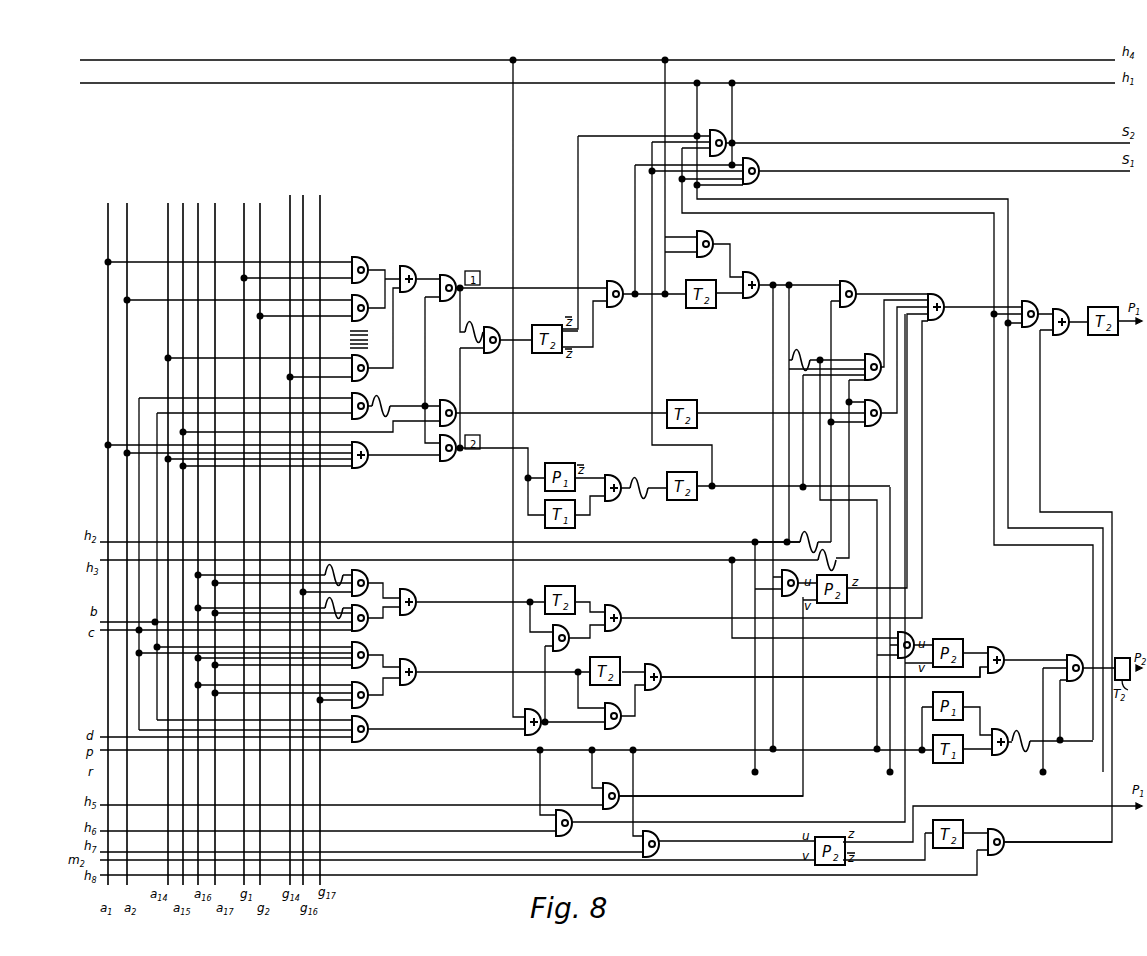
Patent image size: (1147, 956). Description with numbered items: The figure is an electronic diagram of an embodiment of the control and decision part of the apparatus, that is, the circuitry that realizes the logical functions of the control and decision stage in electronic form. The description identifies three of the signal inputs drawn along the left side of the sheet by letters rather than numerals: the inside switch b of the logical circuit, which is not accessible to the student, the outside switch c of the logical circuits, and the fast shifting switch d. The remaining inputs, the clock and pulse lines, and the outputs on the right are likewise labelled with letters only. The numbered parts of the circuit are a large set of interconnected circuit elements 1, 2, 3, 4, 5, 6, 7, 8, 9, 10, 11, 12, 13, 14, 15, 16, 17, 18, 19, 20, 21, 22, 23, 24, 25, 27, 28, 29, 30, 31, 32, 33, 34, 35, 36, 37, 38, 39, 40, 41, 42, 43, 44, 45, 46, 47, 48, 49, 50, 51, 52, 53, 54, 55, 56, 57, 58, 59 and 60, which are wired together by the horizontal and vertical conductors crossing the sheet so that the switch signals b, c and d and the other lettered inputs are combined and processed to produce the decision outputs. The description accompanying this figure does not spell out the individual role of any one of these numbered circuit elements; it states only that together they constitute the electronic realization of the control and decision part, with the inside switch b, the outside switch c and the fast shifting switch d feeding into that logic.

The delay element 1 is at (474, 328).
The NAND gate 2 is at (496, 333).
The flip-flop T2 3 is at (547, 329).
The NAND gate 4 is at (618, 289).
The flip-flop T2 5 is at (706, 299).
The NAND gate 6 is at (707, 238).
The OR gate 7 is at (752, 278).
The delay element 8 is at (801, 355).
The NAND gate 9 is at (851, 289).
The NAND gate 10 is at (875, 360).
The NAND gate 11 is at (883, 411).
The OR gate 12 is at (943, 303).
The delay element 13 is at (811, 534).
The line 14 is at (779, 550).
The pulse generator P1 15 is at (560, 468).
The flip-flop T1 16 is at (570, 521).
The OR gate 17 is at (616, 479).
The delay element 18 is at (642, 483).
The flip-flop T2 19 is at (682, 477).
The NAND gate 20 is at (795, 577).
The pulse generator P2 21 is at (836, 577).
The NAND gate 22 is at (354, 579).
The NAND gate 23 is at (355, 615).
The OR gate 24 is at (413, 596).
The flip-flop T2 and OR gate 25 is at (591, 600).
The NAND gate 27 is at (571, 635).
The NAND gate 28 is at (367, 725).
The OR gate 29 is at (534, 715).
The NAND gate 30 is at (1033, 308).
The line 31 is at (822, 679).
The flip-flop T1 32 is at (939, 728).
The OR gate 33 is at (1004, 737).
The delay element 34 is at (1029, 736).
The NAND gate 35 is at (909, 637).
The pulse generator P2 36 is at (948, 644).
The OR gate 37 is at (1006, 655).
The NAND gate 38 is at (1081, 662).
The NAND gate 39 is at (567, 818).
The NAND gate 40 is at (616, 791).
The flip-flop T2 41 is at (1103, 312).
The flip-flop T2 42 is at (1121, 665).
The NAND gate 43 is at (368, 653).
The NAND gate 44 is at (368, 693).
The OR gate 45 is at (413, 668).
The flip-flop T2 46 is at (605, 662).
The NAND gate 47 is at (621, 712).
The OR gate 48 is at (660, 673).
The NAND gate 49 is at (720, 136).
The NAND gate 50 is at (759, 166).
The NAND gate 51 is at (659, 840).
The pulse generator P2 52 is at (837, 858).
The NAND gate 53 is at (1005, 836).
The OR gate 54 is at (1063, 316).
The flip-flop T2 55 is at (949, 825).
The NAND gate 56 is at (365, 400).
The delay element 57 is at (390, 403).
The NAND gate 58 is at (404, 455).
The NAND gate 59 is at (450, 407).
The NAND gate 60 is at (446, 295).